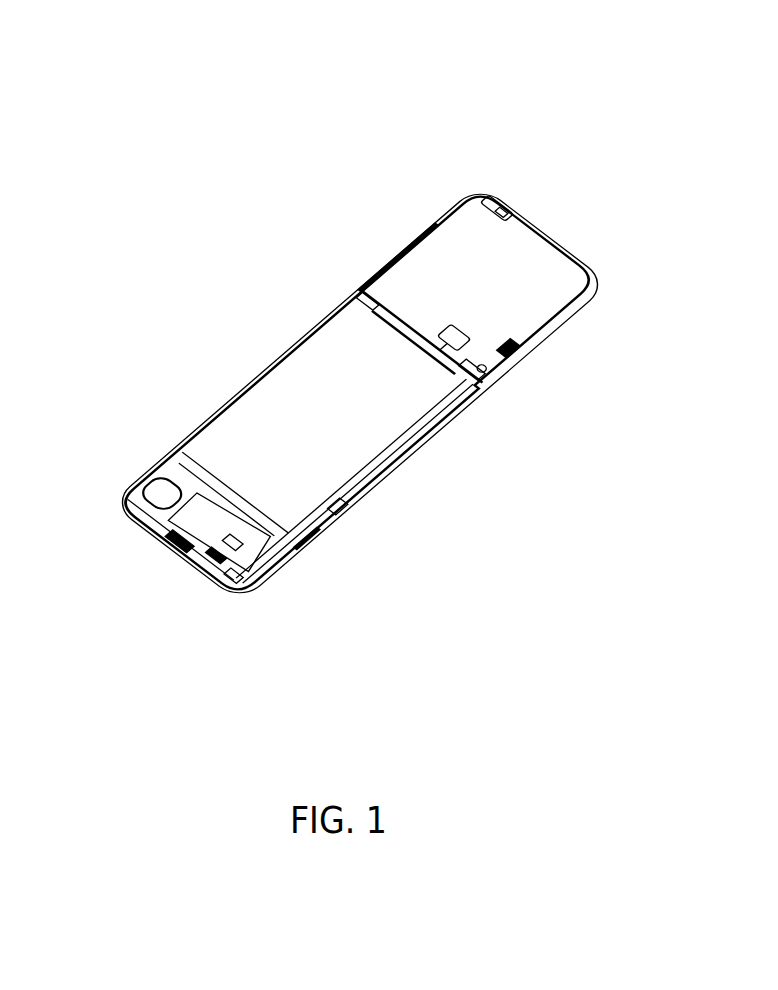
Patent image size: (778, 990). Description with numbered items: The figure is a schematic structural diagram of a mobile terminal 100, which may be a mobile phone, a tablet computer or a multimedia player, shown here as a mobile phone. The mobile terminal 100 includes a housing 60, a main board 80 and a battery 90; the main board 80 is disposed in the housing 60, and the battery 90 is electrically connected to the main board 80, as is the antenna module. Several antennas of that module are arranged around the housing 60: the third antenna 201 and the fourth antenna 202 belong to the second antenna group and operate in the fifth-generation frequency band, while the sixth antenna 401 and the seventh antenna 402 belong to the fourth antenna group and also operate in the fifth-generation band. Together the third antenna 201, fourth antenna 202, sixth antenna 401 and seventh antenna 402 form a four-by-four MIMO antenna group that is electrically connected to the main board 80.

The mobile terminal 100 is at (362, 45).
The housing 60 is at (283, 356).
The main board 80 is at (535, 262).
The battery 90 is at (413, 405).
The third antenna 201 is at (520, 353).
The fourth antenna 202 is at (311, 549).
The sixth antenna 401 is at (166, 458).
The seventh antenna 402 is at (386, 258).